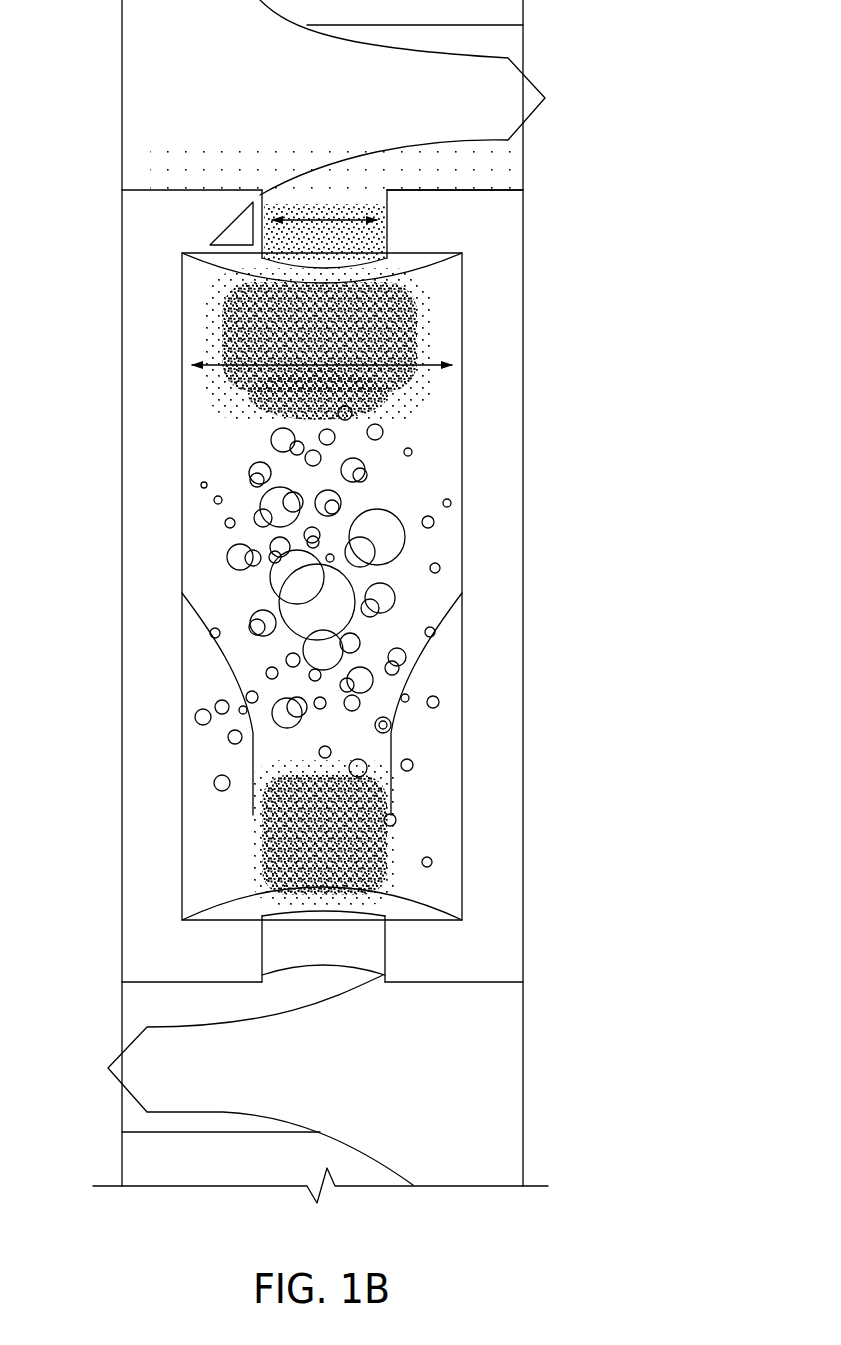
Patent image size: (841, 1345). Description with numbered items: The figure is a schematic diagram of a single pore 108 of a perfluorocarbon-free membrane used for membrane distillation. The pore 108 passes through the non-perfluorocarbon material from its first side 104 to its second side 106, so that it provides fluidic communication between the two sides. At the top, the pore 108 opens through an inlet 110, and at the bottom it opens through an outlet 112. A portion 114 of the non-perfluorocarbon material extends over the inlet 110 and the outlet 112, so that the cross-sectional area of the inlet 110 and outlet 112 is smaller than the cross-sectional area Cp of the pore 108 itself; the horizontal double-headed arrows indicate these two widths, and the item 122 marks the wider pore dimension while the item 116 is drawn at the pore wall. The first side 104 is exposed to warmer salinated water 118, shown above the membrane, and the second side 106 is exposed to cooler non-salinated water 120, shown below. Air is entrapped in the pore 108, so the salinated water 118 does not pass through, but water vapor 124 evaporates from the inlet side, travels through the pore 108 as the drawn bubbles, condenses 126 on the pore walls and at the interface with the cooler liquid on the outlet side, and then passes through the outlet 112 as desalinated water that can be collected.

The first side 104 is at (516, 188).
The second side 106 is at (172, 983).
The pore 108 is at (428, 551).
The inlet 110 is at (303, 262).
The outlet 112 is at (325, 948).
The portion of the non-perfluorocarbon material 114 is at (435, 205).
The chamber wall 116 is at (480, 875).
The salinated water 118 is at (240, 103).
The non-salinated water 120 is at (357, 1102).
The chamber width 122 is at (420, 332).
The water vapor 124 is at (377, 523).
The condensation 126 is at (440, 701).
The cross-sectional area of the pore Cp is at (277, 417).